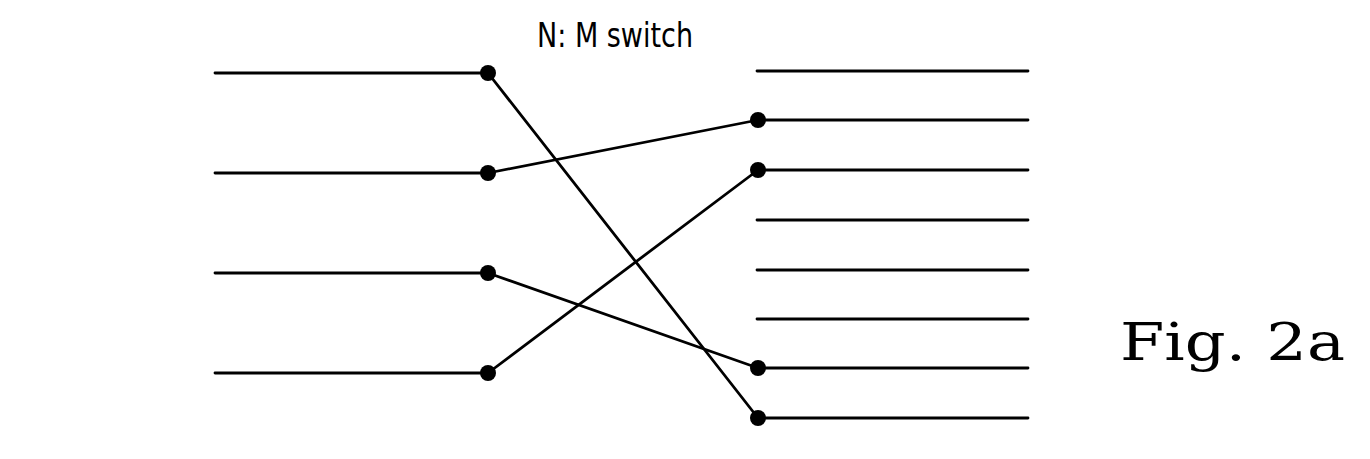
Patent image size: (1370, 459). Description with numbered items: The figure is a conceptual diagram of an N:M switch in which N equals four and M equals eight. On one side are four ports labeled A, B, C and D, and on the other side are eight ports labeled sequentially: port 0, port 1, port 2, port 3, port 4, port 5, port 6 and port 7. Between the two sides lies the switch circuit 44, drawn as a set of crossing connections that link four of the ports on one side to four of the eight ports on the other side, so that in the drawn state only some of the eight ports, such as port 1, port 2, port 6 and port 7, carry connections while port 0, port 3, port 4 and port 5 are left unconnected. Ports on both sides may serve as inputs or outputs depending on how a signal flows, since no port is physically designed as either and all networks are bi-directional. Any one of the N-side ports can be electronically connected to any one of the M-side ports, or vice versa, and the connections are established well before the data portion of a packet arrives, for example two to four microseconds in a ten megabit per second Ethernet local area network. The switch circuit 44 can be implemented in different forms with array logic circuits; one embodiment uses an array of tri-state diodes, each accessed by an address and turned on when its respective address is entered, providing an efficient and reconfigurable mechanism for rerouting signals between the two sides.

The switch circuit 44 is at (624, 246).
The port 0 is at (912, 72).
The port 1 is at (909, 121).
The port 2 is at (909, 171).
The port 3 is at (912, 221).
The port 4 is at (912, 271).
The port 5 is at (912, 320).
The port 6 is at (909, 369).
The port 7 is at (909, 419).